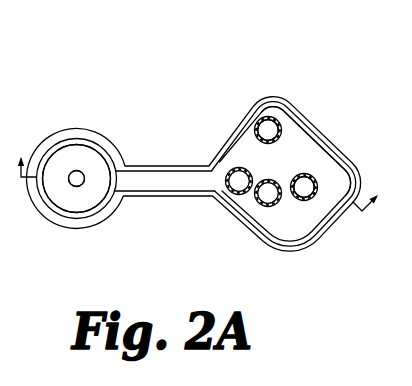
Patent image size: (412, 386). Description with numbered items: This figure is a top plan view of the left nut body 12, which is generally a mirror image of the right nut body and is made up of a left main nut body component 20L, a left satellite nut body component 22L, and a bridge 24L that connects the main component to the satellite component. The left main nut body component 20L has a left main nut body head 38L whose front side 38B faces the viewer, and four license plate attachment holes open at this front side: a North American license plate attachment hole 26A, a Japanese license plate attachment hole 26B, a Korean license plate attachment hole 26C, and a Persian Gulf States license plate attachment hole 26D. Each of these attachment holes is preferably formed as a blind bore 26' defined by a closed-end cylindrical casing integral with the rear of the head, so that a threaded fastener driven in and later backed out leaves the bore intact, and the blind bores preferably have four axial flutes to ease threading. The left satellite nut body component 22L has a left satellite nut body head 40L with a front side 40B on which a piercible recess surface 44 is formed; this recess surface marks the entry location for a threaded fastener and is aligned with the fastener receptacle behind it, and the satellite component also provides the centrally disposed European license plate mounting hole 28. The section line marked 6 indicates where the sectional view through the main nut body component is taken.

The left nut body 12 is at (260, 87).
The left satellite nut body component 22L is at (90, 124).
The bridge 24L is at (141, 165).
The left main nut body component 20L is at (312, 108).
The front side of the main nut body head 38B is at (288, 125).
The left main nut body head 38L is at (297, 127).
The front side of the satellite nut body head 40B is at (68, 152).
The left satellite nut body head 40L is at (55, 192).
The piercible recess surface 44 is at (86, 186).
The European license plate mounting hole 28 is at (78, 191).
The North American license plate attachment hole 26A is at (307, 196).
The Japanese license plate attachment hole 26B is at (262, 124).
The Korean license plate attachment hole 26C is at (265, 200).
The Persian Gulf States license plate attachment hole 26D is at (236, 189).
The blind bore 26' is at (327, 159).
The section line 6- 6 is at (208, 167).